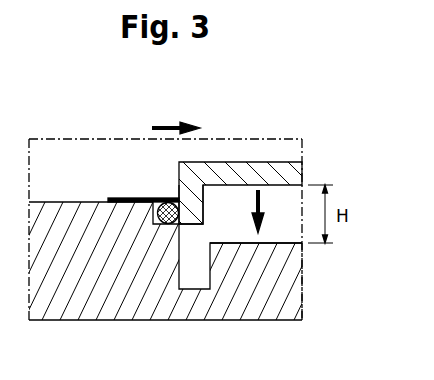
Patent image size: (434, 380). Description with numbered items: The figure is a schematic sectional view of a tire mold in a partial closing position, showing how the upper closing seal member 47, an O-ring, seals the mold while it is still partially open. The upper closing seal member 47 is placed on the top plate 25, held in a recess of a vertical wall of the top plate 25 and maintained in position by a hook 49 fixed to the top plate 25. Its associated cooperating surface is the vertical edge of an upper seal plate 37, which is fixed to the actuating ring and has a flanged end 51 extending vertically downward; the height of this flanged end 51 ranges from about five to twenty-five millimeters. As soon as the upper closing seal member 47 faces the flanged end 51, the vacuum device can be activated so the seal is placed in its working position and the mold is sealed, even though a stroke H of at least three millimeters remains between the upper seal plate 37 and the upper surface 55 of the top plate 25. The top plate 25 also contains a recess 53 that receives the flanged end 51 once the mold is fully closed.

The top plate 25 is at (73, 267).
The upper seal plate 37 is at (270, 172).
The upper closing seal member 47 is at (172, 199).
The hook 49 is at (147, 200).
The flanged end 51 is at (183, 220).
The recess 53 is at (195, 272).
The upper surface 55 is at (270, 240).